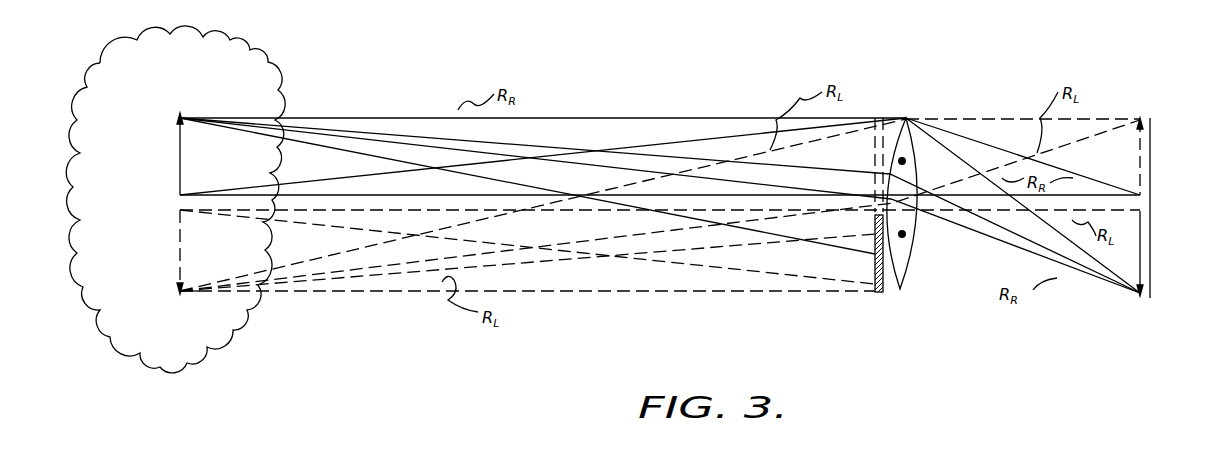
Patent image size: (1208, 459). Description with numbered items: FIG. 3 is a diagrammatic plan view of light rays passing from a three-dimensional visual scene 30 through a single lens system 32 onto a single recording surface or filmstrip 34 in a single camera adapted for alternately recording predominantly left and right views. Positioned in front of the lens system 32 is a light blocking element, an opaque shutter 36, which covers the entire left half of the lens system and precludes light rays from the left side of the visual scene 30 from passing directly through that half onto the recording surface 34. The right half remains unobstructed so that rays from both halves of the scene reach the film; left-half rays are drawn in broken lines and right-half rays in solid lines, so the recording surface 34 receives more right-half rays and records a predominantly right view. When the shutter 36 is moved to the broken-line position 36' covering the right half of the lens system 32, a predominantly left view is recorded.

The three-dimensional visual scene 30 is at (262, 72).
The single lens system 32 is at (913, 262).
The recording surface or filmstrip 34 is at (1157, 190).
The opaque shutter 36 is at (902, 271).
The shutter position covering right half of lens system 36' is at (907, 139).